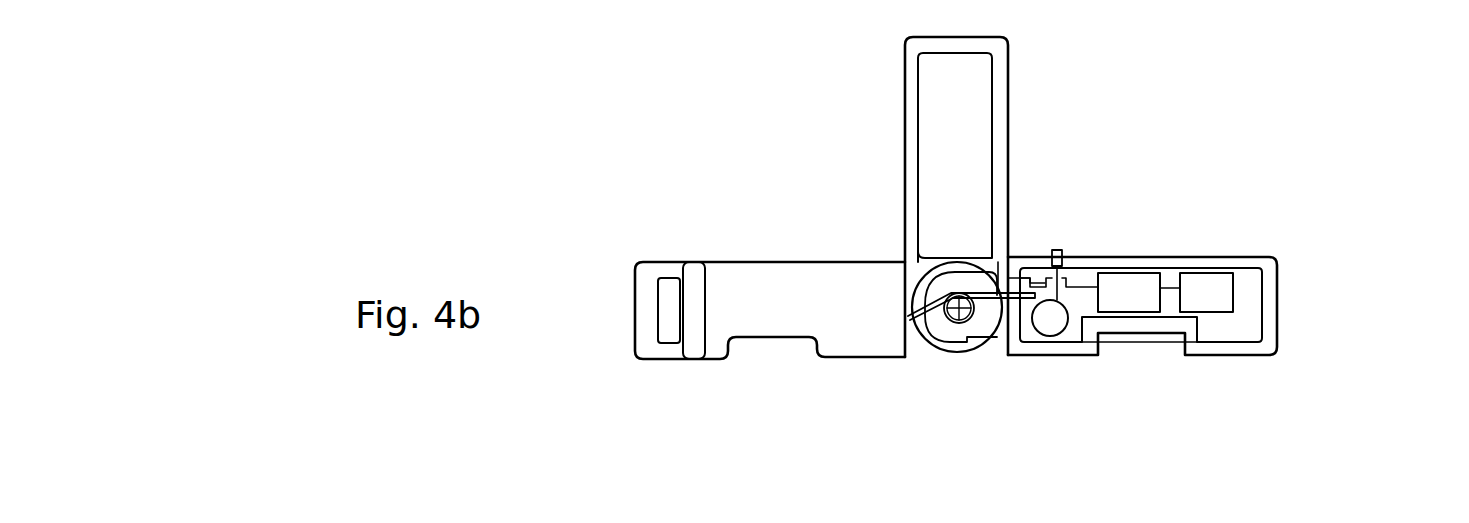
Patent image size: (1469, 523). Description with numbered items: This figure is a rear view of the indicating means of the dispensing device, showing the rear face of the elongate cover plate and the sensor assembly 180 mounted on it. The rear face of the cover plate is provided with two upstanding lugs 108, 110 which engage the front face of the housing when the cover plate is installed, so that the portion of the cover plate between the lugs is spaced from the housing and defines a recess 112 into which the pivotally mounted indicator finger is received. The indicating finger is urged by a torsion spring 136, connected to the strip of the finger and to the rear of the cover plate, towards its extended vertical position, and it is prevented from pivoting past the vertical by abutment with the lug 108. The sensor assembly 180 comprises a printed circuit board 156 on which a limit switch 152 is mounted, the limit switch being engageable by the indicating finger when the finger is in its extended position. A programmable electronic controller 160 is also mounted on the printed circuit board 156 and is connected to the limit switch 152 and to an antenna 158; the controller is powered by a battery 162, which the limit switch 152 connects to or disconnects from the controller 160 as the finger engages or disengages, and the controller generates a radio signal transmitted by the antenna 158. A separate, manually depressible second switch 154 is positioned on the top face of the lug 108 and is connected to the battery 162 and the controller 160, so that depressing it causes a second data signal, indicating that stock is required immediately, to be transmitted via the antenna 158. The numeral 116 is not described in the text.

The upstanding lug 108 is at (1097, 256).
The upstanding lug 110 is at (660, 274).
The recess 112 is at (829, 263).
The arm 116 is at (1003, 150).
The torsion spring 136 is at (1000, 336).
The limit switch 152 is at (1008, 277).
The second switch 154 is at (1058, 250).
The printed circuit board 156 is at (1228, 342).
The antenna 158 is at (1233, 299).
The programmable electronic controller 160 is at (1113, 312).
The battery 162 is at (1051, 336).
The sensor assembly 180 is at (1265, 273).